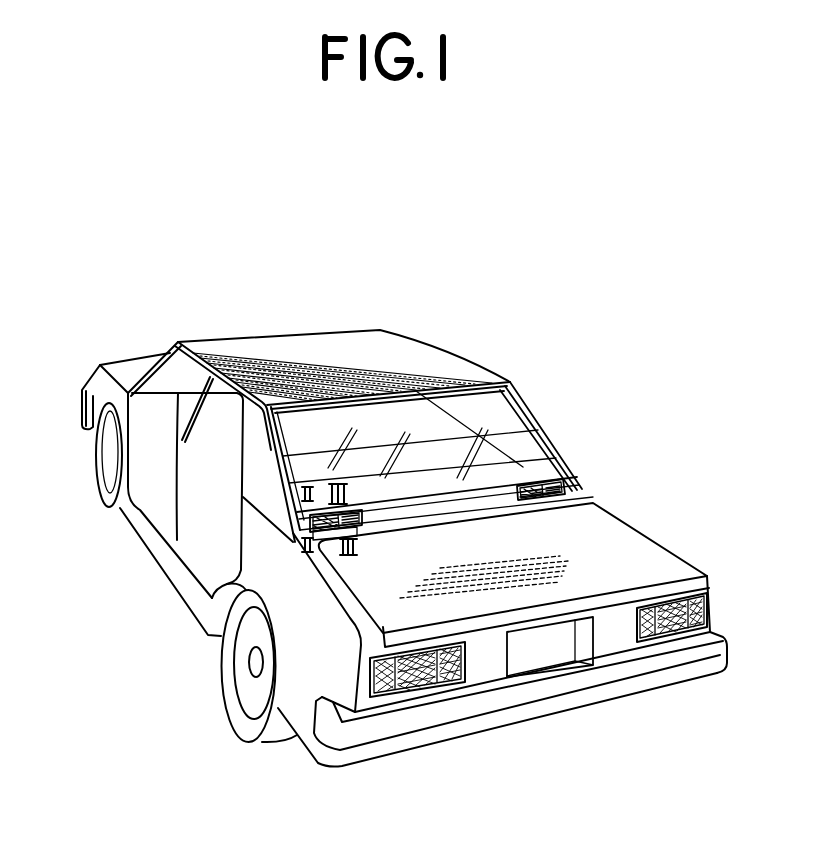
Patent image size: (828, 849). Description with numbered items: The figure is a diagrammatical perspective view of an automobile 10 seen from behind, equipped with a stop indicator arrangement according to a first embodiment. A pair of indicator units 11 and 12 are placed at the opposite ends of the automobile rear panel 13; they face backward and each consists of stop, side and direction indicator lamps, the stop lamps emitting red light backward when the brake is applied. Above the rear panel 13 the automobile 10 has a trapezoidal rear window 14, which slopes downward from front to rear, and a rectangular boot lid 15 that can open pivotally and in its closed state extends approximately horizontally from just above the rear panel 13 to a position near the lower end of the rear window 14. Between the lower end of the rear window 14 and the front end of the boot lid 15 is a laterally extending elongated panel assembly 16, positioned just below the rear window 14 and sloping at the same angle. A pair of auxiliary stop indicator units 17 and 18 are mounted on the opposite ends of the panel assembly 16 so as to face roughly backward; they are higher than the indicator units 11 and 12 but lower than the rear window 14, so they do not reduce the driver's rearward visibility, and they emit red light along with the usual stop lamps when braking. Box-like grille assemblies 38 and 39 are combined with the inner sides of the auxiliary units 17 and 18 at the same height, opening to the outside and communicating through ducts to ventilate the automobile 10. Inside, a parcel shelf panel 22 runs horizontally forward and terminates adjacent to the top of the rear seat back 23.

The automobile 10 is at (288, 328).
The indicator unit 11 is at (425, 683).
The indicator unit 12 is at (670, 627).
The rear panel 13 is at (612, 643).
The rear window 14 is at (473, 405).
The boot lid 15 is at (627, 537).
The panel assembly 16 is at (500, 497).
The auxiliary stop indicator unit 17 is at (293, 530).
The auxiliary stop indicator unit 18 is at (560, 484).
The parcel shelf panel 22 is at (517, 467).
The rear seat back 23 is at (497, 425).
The grille assembly 38 is at (357, 536).
The grille assembly 39 is at (533, 500).